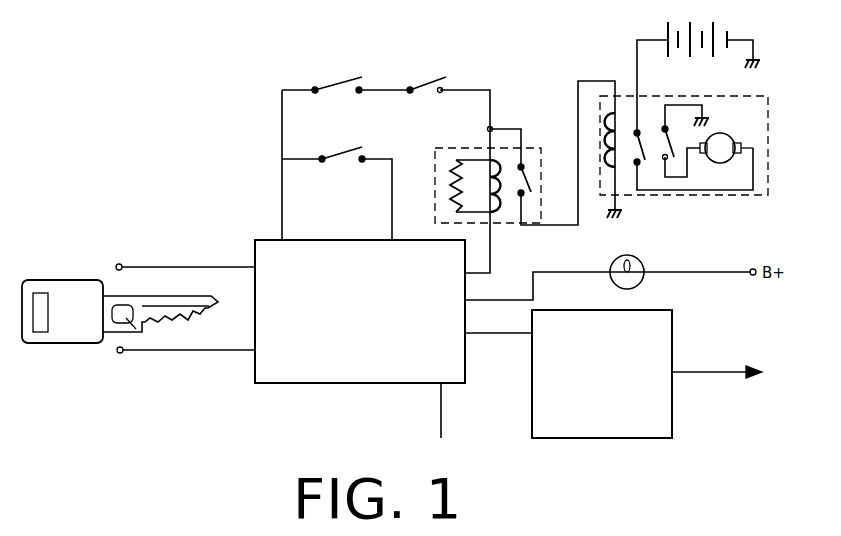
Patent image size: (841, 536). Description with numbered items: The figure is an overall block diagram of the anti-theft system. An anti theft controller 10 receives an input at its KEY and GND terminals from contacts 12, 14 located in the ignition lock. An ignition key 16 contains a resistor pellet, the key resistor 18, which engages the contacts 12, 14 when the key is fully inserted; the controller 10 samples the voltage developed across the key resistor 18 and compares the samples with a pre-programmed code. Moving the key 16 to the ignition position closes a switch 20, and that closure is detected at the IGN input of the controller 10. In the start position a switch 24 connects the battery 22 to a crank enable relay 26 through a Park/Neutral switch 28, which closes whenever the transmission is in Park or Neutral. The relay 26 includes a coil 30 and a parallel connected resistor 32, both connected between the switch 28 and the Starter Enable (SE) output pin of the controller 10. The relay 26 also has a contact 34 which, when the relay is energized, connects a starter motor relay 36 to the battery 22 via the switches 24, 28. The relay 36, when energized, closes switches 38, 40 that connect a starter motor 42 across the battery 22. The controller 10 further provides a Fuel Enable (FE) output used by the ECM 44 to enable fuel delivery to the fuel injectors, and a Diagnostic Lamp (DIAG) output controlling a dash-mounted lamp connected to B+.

The anti theft controller 10 is at (468, 355).
The contact 12 is at (109, 262).
The contact 14 is at (125, 355).
The ignition key 16 is at (68, 292).
The key resistor 18 is at (140, 326).
The switch 20 is at (350, 158).
The battery 22 is at (667, 34).
The switch 24 is at (345, 83).
The crank enable relay 26 is at (477, 186).
The Park/Neutral switch 28 is at (425, 80).
The coil 30 is at (487, 178).
The resistor 32 is at (447, 188).
The relay contact 34 is at (527, 175).
The starter motor relay 36 is at (613, 128).
The switch 38 is at (642, 145).
The switch 40 is at (672, 142).
The starter motor 42 is at (720, 165).
The ECM 44 is at (653, 358).